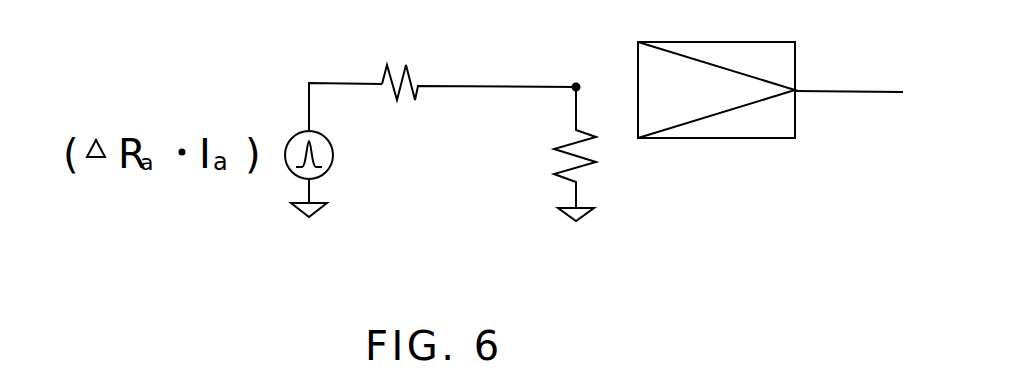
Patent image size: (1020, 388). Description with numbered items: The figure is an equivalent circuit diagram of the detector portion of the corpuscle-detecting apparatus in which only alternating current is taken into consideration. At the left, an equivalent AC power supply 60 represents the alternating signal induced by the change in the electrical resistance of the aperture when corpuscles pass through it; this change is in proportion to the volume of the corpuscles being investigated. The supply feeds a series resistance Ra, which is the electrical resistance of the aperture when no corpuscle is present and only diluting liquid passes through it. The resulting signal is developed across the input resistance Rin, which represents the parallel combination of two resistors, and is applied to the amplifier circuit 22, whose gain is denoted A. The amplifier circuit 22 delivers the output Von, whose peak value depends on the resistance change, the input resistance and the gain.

The equivalent AC power supply 60 is at (287, 150).
The amplifier circuit 22 is at (716, 69).
The electrical resistance of the aperture Ra is at (479, 66).
The parallel combination of resistors Rin is at (617, 154).
The output Von is at (849, 68).